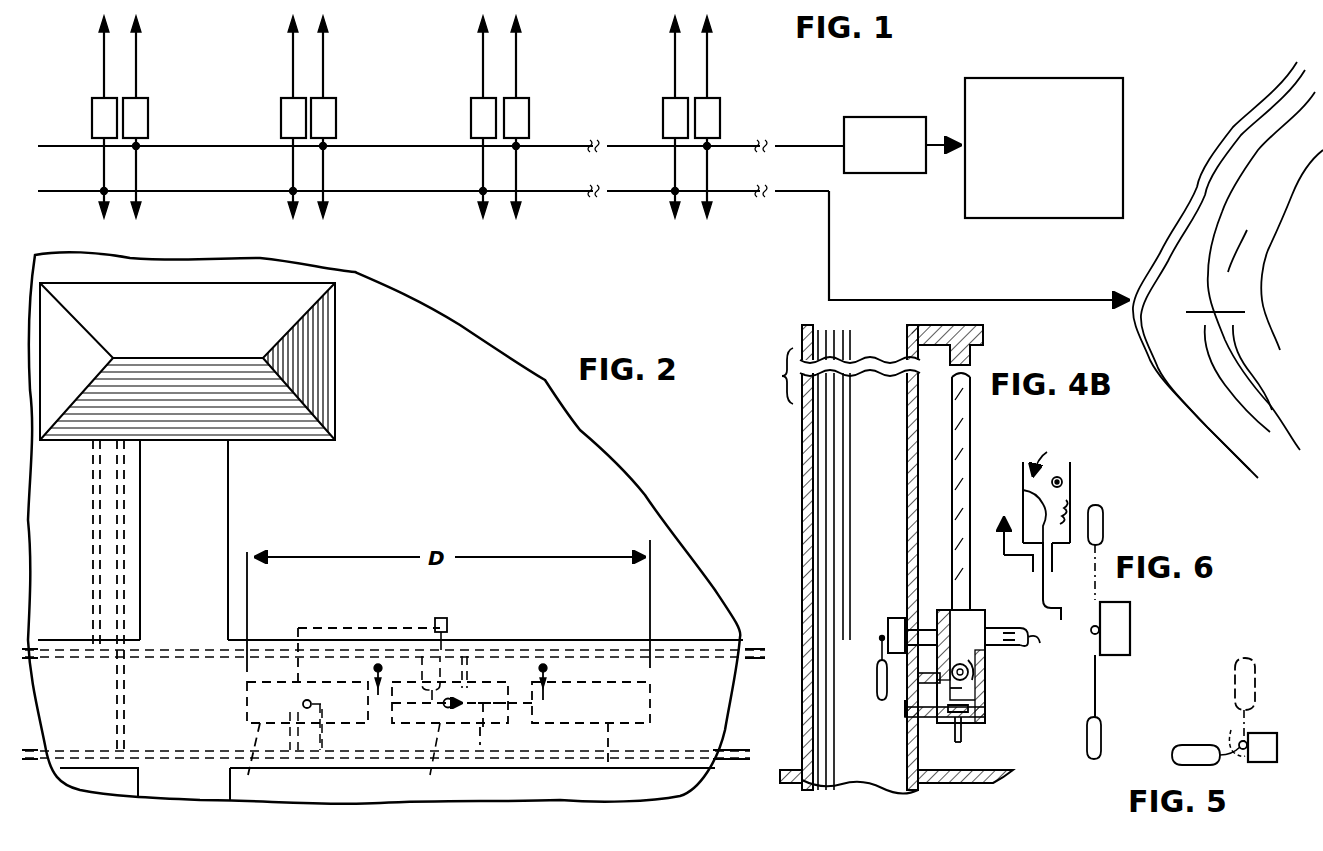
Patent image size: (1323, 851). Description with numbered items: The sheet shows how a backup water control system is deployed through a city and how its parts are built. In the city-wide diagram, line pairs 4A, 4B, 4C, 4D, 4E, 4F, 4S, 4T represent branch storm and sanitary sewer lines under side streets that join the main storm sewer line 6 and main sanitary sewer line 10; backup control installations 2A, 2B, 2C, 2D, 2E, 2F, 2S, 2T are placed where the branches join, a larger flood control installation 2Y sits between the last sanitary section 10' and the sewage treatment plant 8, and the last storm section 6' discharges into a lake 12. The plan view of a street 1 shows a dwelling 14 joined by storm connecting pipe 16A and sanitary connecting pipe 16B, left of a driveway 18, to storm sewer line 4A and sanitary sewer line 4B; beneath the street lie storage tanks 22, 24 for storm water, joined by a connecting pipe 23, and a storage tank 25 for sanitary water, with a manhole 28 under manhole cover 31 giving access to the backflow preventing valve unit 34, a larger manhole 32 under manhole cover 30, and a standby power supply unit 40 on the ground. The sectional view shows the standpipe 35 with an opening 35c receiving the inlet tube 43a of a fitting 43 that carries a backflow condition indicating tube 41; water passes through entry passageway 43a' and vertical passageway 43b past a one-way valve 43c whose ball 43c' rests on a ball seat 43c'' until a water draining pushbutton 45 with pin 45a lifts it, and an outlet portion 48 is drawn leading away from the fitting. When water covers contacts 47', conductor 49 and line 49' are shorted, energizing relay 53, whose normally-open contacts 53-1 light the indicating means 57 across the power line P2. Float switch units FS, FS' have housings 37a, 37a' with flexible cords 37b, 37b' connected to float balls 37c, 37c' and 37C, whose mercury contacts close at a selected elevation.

In FIG. 2, the street 1 is at (165, 706).
In FIG. 1, the backup control installation 2A is at (92, 117).
In FIG. 1, the backup control installation 2B is at (148, 115).
In FIG. 1, the backup control installation 2C is at (281, 117).
In FIG. 1, the backup control installation 2D is at (336, 117).
In FIG. 1, the backup control installation 2E is at (471, 117).
In FIG. 1, the backup control installation 2F is at (529, 117).
In FIG. 1, the backup control installation 2S is at (663, 117).
In FIG. 1, the backup control installation 2T is at (720, 117).
In FIG. 1, the flood control installation 2Y is at (882, 117).
In FIG. 1, the storm sewer line 4A is at (102, 57).
In FIG. 2, the storm sewer line 4A is at (174, 648).
In FIG. 1, the sanitary sewer line 4B is at (138, 68).
In FIG. 2, the sanitary sewer line 4B is at (214, 758).
In FIG. 1, the branch sewer line 4C is at (291, 69).
In FIG. 1, the branch sewer line 4D is at (325, 68).
In FIG. 1, the branch sewer line 4E is at (481, 69).
In FIG. 1, the branch sewer line 4F is at (518, 68).
In FIG. 1, the branch sewer line 4S is at (673, 69).
In FIG. 1, the branch sewer line 4T is at (709, 68).
In FIG. 1, the main storm sewer line 6 is at (433, 201).
In FIG. 1, the last storm sewer line section 6' is at (978, 245).
In FIG. 1, the sewage treatment plant 8 is at (1030, 78).
In FIG. 1, the main sanitary sewer line 10 is at (437, 158).
In FIG. 1, the last sanitary sewer line section 10' is at (822, 118).
In FIG. 1, the lake 12 is at (1150, 244).
In FIG. 2, the dwelling 14 is at (322, 366).
In FIG. 2, the storm sewer line connecting pipe 16A is at (92, 540).
In FIG. 2, the sanitary sewer line connecting pipe 16B is at (126, 550).
In FIG. 2, the driveway 18 is at (218, 486).
In FIG. 2, the storage tank 22 is at (476, 748).
In FIG. 2, the connecting pipe 23 is at (512, 703).
In FIG. 2, the storage tank 24 is at (606, 756).
In FIG. 2, the storage tank 25 is at (248, 766).
In FIG. 2, the manhole 28 is at (432, 648).
In FIG. 2, the manhole cover 30 is at (444, 706).
In FIG. 2, the manhole cover 31 is at (430, 650).
In FIG. 2, the manhole 32 is at (458, 756).
In FIG. 4B, the backflow preventing valve unit 34 is at (782, 778).
In FIG. 4B, the standpipe 35 is at (794, 453).
In FIG. 4B, the standpipe opening 35c is at (908, 712).
In FIG. 6, the float ball 37C is at (1103, 532).
In FIG. 6, the float switch housing 37a is at (1155, 625).
In FIG. 5, the float switch housing 37a' is at (1269, 676).
In FIG. 6, the flexible cord 37b is at (1130, 686).
In FIG. 5, the flexible cord 37b' is at (1260, 763).
In FIG. 4B, the float ball 37c is at (856, 668).
In FIG. 6, the float ball 37c is at (1123, 723).
In FIG. 5, the float ball 37c' is at (1205, 726).
In FIG. 2, the standby power supply unit 40 is at (452, 622).
In FIG. 4B, the backflow condition indicating tube 41 is at (973, 452).
In FIG. 4B, the fitting 43 is at (980, 608).
In FIG. 4B, the inlet tube 43a is at (909, 744).
In FIG. 4B, the entry passageway 43a' is at (879, 699).
In FIG. 4B, the vertical passageway 43b is at (988, 664).
In FIG. 4B, the one-way valve 43c is at (1002, 689).
In FIG. 4B, the ball 43c' is at (1013, 698).
In FIG. 4B, the ball seat 43c'' is at (890, 686).
In FIG. 4B, the water draining pushbutton 45 is at (960, 732).
In FIG. 4B, the pin 45a is at (974, 718).
In FIG. 4B, the contacts 47' is at (963, 608).
In FIG. 4B, the outlet pipe 48 is at (1028, 644).
In FIG. 4B, the conductor 49 is at (1039, 516).
In FIG. 4B, the line 49' is at (1005, 528).
In FIG. 4B, the relay 53 is at (1074, 502).
In FIG. 4B, the normally-open contacts 53-1 is at (1070, 432).
In FIG. 4B, the light indicating means 57 is at (1062, 476).
In FIG. 4B, the float switch unit FS is at (873, 608).
In FIG. 6, the float switch unit FS is at (1141, 618).
In FIG. 5, the float switch unit FS' is at (1259, 701).
In FIG. 4B, the power line P2 is at (1029, 512).